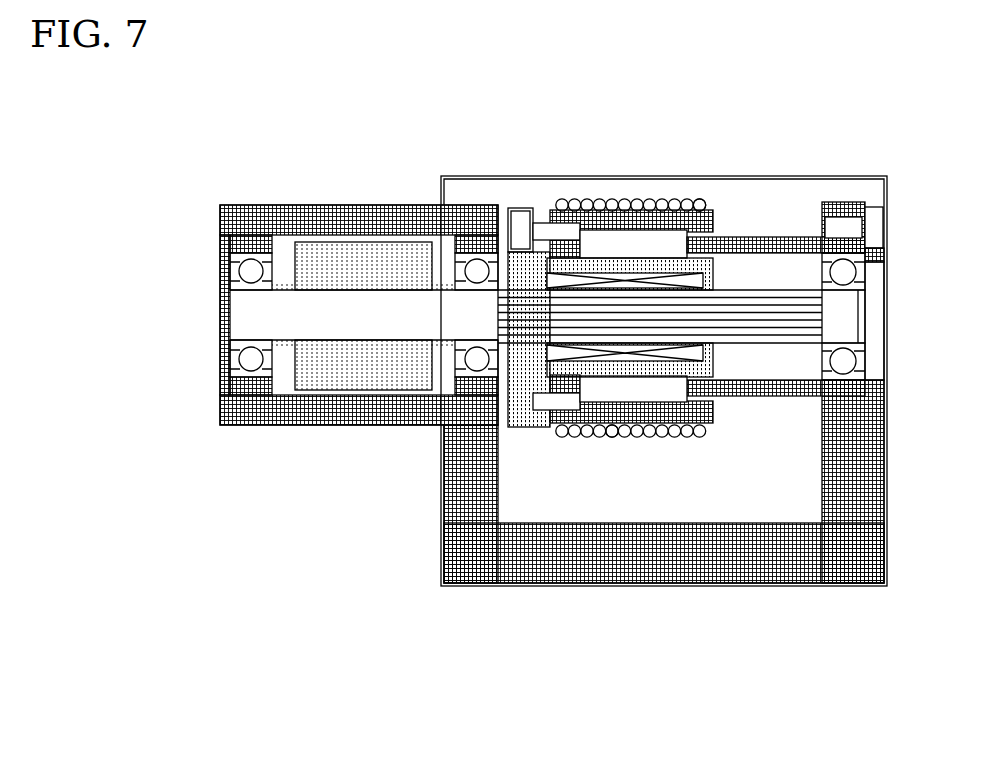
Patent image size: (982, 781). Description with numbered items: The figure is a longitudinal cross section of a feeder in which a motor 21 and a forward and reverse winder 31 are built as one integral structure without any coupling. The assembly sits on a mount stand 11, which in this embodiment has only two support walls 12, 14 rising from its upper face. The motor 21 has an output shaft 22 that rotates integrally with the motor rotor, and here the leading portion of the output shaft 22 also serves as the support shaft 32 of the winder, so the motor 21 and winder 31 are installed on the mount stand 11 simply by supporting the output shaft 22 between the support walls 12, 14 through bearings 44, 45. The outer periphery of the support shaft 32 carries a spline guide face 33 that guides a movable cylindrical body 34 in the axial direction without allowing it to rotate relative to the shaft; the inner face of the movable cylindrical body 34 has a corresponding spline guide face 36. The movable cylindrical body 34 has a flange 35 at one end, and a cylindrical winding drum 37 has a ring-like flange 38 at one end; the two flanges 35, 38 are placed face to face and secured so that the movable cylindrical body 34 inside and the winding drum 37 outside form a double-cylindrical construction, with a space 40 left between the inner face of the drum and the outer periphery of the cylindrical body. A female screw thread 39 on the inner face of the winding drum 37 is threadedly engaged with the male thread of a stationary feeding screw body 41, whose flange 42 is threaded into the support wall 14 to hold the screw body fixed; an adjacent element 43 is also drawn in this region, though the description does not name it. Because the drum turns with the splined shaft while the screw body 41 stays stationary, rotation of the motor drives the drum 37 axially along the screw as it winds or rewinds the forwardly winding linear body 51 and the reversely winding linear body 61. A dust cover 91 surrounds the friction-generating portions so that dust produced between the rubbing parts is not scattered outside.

The mount stand 11 is at (457, 584).
The support wall 12 is at (472, 228).
The support wall 14 is at (853, 202).
The motor 21 is at (287, 205).
The output shaft 22 is at (353, 313).
The support shaft 32 is at (363, 316).
The forward and reverse winder 31 is at (501, 232).
The guide face 33 is at (605, 313).
The movable cylindrical body 34 is at (675, 380).
The flange 35 is at (530, 413).
The guide face 36 is at (652, 363).
The winding drum 37 is at (608, 438).
The ring-like flange 38 is at (563, 438).
The female screw thread 39 is at (625, 237).
The space 40 is at (652, 247).
The stationary feeding screw body 41 is at (768, 237).
The flange 42 is at (825, 430).
The upper yoke 43 is at (711, 220).
The bearing 44 is at (250, 275).
The bearing 45 is at (838, 276).
The forwardly winding linear body 51 is at (697, 200).
The reversely winding linear body 61 is at (563, 200).
The dust cover 91 is at (869, 176).